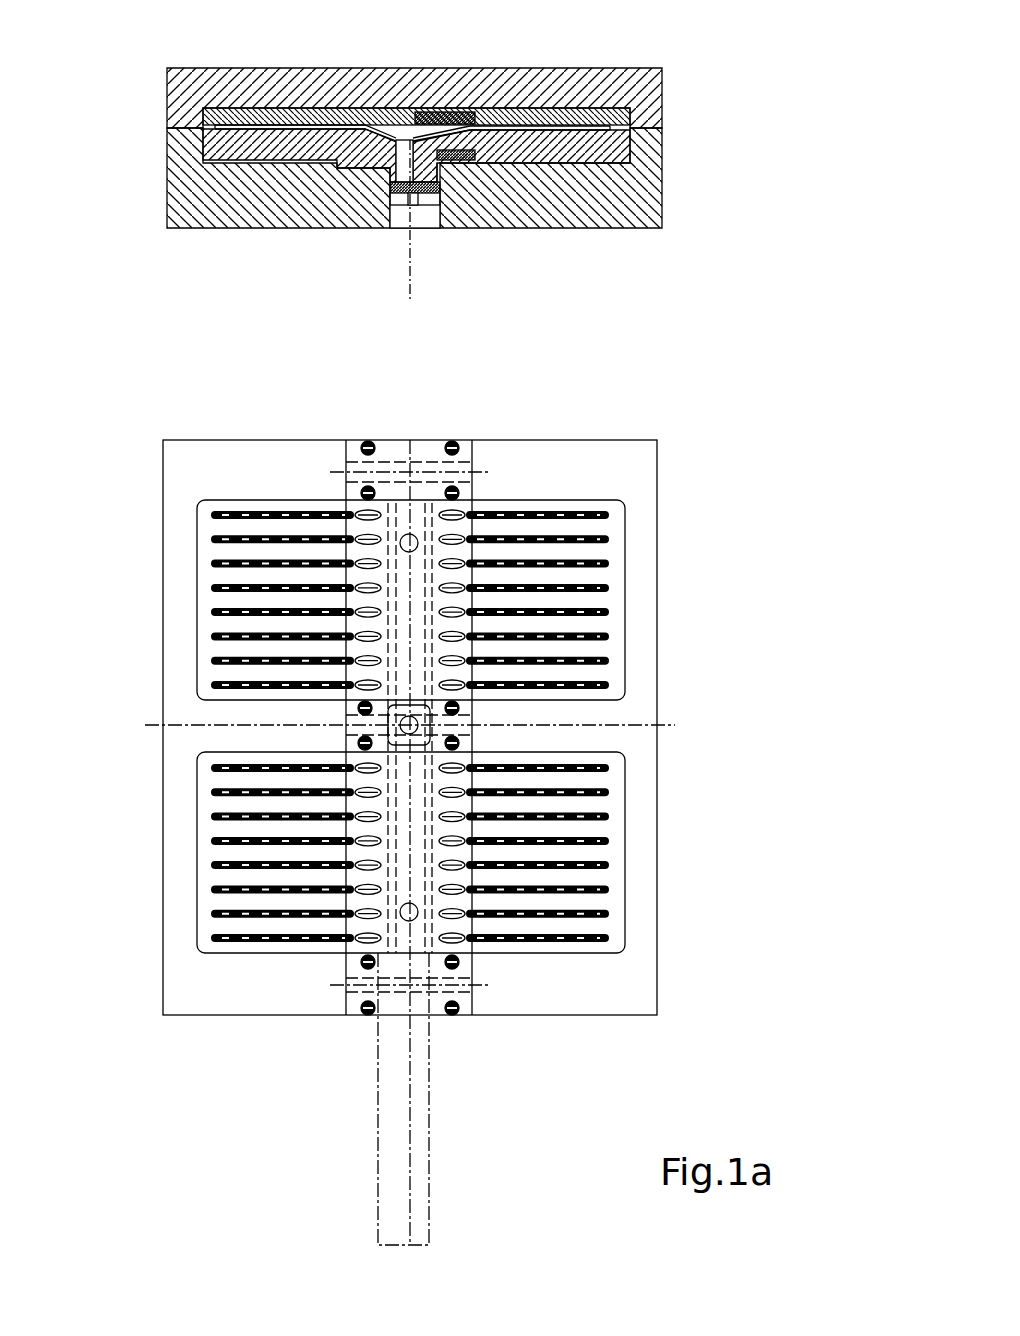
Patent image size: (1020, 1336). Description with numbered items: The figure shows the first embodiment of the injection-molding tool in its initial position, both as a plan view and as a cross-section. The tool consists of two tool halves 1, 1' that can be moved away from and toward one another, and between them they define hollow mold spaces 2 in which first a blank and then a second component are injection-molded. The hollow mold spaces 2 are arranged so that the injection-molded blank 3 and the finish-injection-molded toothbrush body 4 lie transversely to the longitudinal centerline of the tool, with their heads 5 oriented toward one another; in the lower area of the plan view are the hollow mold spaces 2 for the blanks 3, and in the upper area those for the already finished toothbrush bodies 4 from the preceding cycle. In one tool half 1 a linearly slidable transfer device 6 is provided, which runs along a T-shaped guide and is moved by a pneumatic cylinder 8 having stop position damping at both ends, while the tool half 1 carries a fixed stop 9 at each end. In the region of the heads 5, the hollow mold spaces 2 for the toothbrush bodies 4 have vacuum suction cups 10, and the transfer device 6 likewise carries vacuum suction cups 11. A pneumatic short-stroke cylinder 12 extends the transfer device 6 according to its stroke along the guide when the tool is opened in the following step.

The tool half 1 is at (449, 571).
The tool half 1' is at (455, 98).
The hollow mold spaces 2 is at (242, 128).
The injection-molded blank 3 is at (290, 124).
The finish-injection-molded toothbrush body 4 is at (570, 125).
The heads 5 is at (367, 127).
The transfer device 6 is at (440, 195).
The pneumatic cylinder 8 is at (398, 1093).
The fixed stop 9 is at (346, 1007).
The vacuum suction cups 10 is at (503, 200).
The vacuum suction cups 11 is at (453, 113).
The pneumatic short-stroke cylinder 12 is at (397, 283).